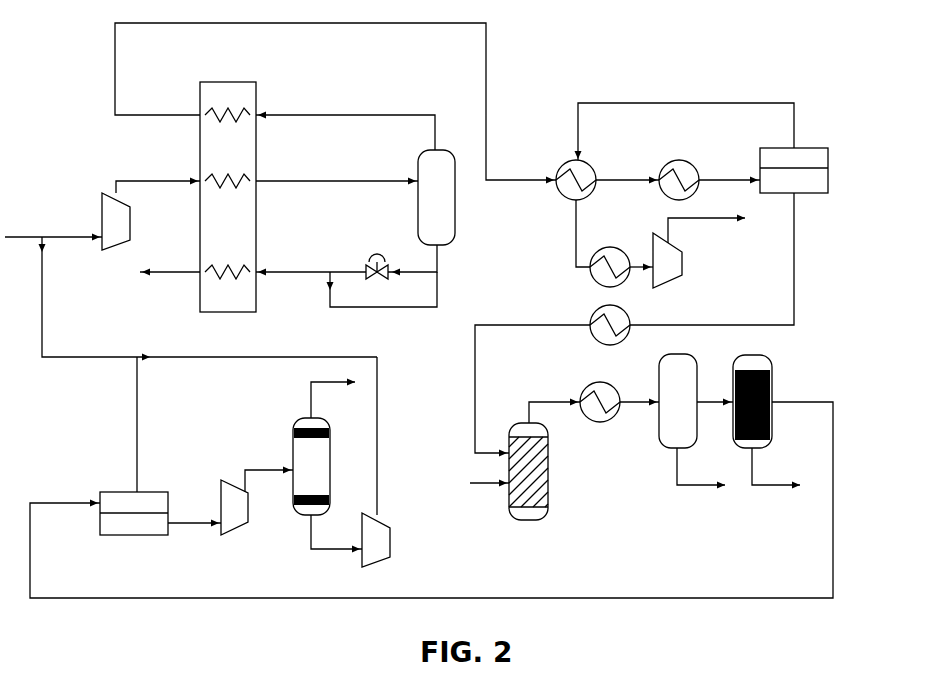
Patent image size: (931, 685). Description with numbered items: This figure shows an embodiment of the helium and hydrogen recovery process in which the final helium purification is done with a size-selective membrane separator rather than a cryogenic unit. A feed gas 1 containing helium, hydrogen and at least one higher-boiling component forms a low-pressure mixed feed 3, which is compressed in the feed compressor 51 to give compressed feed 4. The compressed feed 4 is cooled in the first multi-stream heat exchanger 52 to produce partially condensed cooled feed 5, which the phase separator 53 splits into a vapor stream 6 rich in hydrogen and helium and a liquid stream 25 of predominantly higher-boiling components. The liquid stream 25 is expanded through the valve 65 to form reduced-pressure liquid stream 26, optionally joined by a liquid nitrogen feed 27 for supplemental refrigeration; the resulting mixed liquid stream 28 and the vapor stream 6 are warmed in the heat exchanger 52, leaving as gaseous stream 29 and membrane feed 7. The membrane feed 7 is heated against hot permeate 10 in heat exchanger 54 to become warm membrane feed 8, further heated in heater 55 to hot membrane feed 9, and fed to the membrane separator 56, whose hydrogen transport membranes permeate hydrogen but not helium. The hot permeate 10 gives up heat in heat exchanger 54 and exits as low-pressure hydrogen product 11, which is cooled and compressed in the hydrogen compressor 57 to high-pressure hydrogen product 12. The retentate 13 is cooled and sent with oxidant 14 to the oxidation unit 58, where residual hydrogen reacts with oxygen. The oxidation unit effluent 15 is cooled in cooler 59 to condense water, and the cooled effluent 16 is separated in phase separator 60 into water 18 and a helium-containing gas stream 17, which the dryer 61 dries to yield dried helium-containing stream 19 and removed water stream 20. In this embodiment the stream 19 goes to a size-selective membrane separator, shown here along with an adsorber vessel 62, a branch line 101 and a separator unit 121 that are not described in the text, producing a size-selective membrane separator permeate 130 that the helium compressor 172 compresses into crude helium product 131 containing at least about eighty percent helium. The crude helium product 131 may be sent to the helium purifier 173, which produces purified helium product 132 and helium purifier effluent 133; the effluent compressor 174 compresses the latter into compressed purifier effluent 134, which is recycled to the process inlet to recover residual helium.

The feed gas 1 is at (23, 230).
The low-pressure mixed feed 3 is at (72, 232).
The compressed feed 4 is at (158, 177).
The partially condensed cooled feed 5 is at (337, 173).
The vapor stream 6 is at (345, 125).
The membrane feed 7 is at (335, 103).
The warm membrane feed 8 is at (627, 174).
The hot membrane feed 9 is at (729, 174).
The hot permeate 10 is at (685, 125).
The low-pressure hydrogen product 11 is at (586, 233).
The high-pressure hydrogen product 12 is at (706, 229).
The retentate 13 is at (634, 325).
The oxidant 14 is at (489, 489).
The oxidation unit effluent 15 is at (554, 411).
The cooled effluent 16 is at (639, 409).
The gas stream 17 is at (715, 409).
The water 18 is at (701, 474).
The dried helium-containing stream 19 is at (431, 500).
The removed water stream 20 is at (776, 474).
The liquid stream 25 is at (412, 260).
The reduced-pressure liquid stream 26 is at (348, 264).
The liquid nitrogen feed 27 is at (382, 289).
The mixed liquid stream 28 is at (293, 266).
The gaseous stream 29 is at (170, 266).
The feed compressor 51 is at (116, 221).
The first multi-stream heat exchanger 52 is at (228, 197).
The phase separator 53 is at (436, 197).
The heat exchanger 54 is at (569, 185).
The heater 55 is at (673, 185).
The membrane separator 56 is at (621, 272).
The hydrogen compressor 57 is at (667, 260).
The oxidation unit 58 is at (794, 170).
The cooler 59 is at (602, 367).
The phase separator 60 is at (678, 401).
The dryer 61 is at (528, 471).
The adsorber vessel 62 is at (752, 401).
The valve 65 is at (377, 273).
The slip stream 101 is at (208, 364).
The separator 121 is at (134, 513).
The size-selective membrane separator permeate 130 is at (194, 517).
The crude helium product 131 is at (269, 480).
The purified helium product 132 is at (333, 399).
The helium purifier effluent 133 is at (336, 534).
The compressed purifier effluent 134 is at (389, 436).
The helium compressor 172 is at (234, 507).
The helium purifier 173 is at (311, 466).
The effluent compressor 174 is at (376, 540).